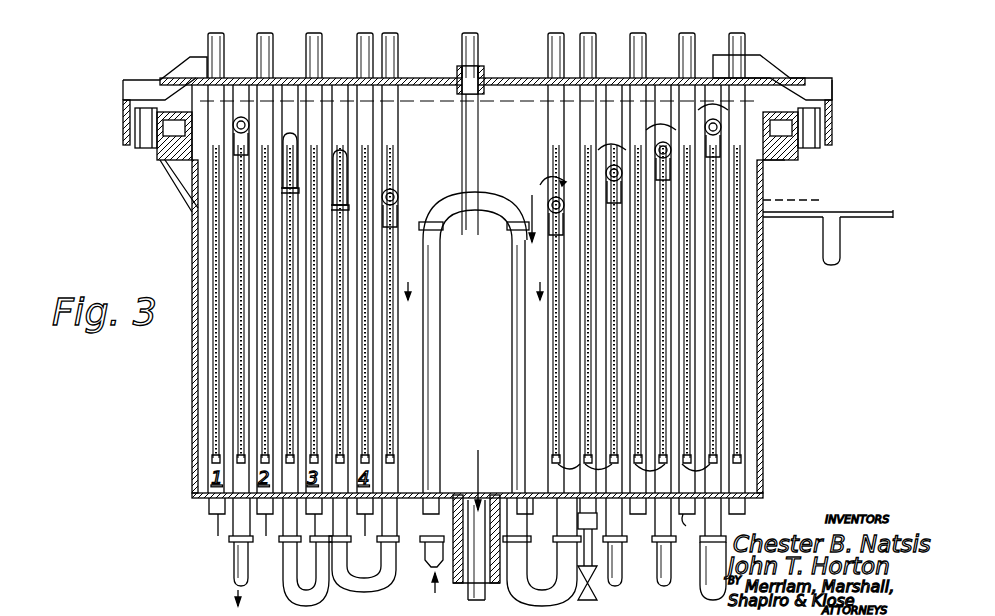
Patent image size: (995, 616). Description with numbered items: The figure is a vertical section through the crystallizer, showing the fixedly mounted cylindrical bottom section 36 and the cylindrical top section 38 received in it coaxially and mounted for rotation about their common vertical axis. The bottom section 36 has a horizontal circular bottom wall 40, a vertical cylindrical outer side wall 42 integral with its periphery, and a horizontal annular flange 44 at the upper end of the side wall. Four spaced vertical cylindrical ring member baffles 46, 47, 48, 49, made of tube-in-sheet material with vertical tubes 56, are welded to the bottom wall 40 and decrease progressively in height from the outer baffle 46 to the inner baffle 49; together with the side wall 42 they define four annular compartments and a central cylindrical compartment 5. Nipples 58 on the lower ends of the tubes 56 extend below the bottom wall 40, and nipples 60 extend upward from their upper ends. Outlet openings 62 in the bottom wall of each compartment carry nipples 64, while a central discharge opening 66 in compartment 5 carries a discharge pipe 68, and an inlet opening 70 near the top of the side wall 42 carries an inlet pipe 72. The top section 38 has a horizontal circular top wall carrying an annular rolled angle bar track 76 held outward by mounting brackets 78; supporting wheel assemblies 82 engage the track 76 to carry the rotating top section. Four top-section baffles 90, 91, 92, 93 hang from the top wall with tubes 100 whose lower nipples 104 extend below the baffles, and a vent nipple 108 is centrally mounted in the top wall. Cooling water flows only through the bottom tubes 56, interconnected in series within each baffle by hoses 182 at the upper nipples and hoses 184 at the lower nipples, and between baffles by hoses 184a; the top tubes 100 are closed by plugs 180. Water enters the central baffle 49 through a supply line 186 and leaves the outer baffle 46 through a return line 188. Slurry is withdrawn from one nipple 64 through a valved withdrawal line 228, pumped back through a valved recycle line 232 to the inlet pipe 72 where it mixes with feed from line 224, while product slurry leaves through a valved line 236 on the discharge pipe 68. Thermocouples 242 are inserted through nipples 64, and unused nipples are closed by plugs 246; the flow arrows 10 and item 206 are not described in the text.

The central cylindrical compartment 5 is at (494, 467).
The flow direction arrows 10 is at (478, 262).
The cylindrical bottom section 36 is at (190, 418).
The cylindrical top section 38 is at (420, 78).
The bottom wall 40 is at (200, 496).
The outer side wall 42 is at (190, 363).
The annular flange 44 is at (780, 172).
The outer baffle 46 is at (718, 288).
The ring member baffle 47 is at (612, 312).
The ring member baffle 48 is at (550, 337).
The inner baffle 49 is at (563, 336).
The tubes 56 is at (512, 386).
The nipples 58 is at (423, 514).
The nipples 60 is at (335, 160).
The outlet openings 62 is at (762, 449).
The nipple 64 is at (212, 512).
The discharge opening 66 is at (476, 505).
The discharge pipe 68 is at (458, 556).
The inlet opening 70 is at (765, 192).
The inlet pipe 72 is at (782, 217).
The angle bar track 76 is at (123, 125).
The mounting brackets 78 is at (170, 70).
The supporting wheel assemblies 82 is at (145, 152).
The outer baffle 90 is at (192, 207).
The ring member baffle 91 is at (262, 228).
The ring member baffle 92 is at (312, 252).
The ring member baffle 93 is at (432, 160).
The tubes 100 is at (536, 122).
The nipples 104 is at (220, 440).
The vent nipple 108 is at (488, 70).
The plugs 180 is at (212, 460).
The hoses 182 is at (250, 125).
The hoses 184 is at (730, 590).
The hoses 184a is at (300, 590).
The supply line 186 is at (426, 570).
The return line 188 is at (236, 570).
The stub 206 is at (638, 514).
The line 224 is at (893, 212).
The valved withdrawal line 228 is at (570, 602).
The valved recycle line 232 is at (845, 258).
The valved line 236 is at (485, 590).
The thermocouples 242 is at (266, 514).
The plugs 246 is at (737, 514).